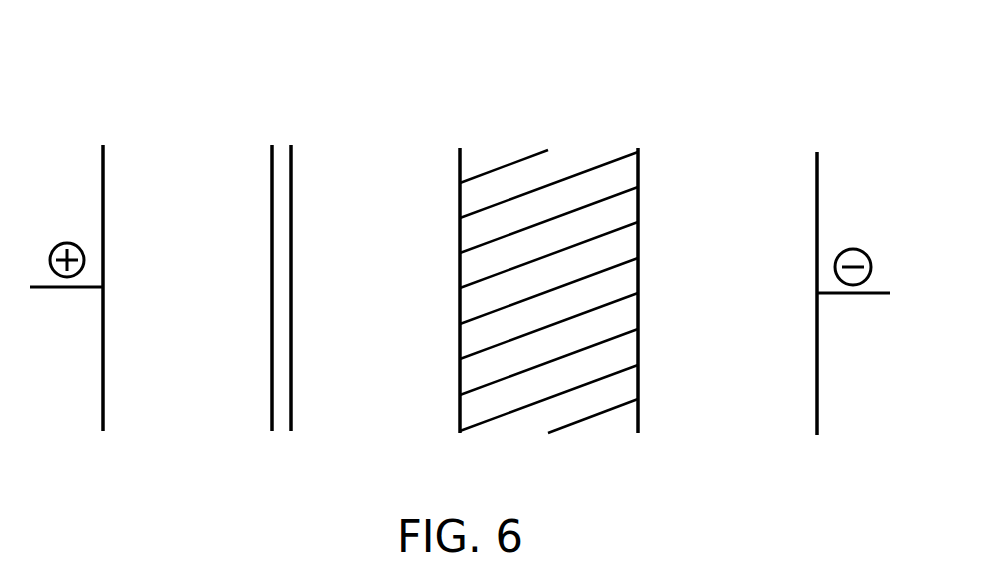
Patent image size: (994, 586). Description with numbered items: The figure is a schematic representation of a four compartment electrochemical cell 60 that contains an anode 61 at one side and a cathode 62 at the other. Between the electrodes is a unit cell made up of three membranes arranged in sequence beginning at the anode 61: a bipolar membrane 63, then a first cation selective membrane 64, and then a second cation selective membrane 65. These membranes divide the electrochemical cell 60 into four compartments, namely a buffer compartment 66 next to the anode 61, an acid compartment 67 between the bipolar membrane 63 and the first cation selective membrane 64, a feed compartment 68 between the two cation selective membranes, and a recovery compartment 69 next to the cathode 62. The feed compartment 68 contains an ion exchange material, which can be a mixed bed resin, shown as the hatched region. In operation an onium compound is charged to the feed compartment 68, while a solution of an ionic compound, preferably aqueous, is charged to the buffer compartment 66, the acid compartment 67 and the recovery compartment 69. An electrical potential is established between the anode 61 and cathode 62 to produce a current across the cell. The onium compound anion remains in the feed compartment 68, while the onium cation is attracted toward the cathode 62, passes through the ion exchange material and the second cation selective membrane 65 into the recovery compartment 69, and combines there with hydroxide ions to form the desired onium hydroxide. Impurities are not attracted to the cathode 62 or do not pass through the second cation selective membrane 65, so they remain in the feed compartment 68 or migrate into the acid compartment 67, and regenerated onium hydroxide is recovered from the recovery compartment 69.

The electrochemical cell 60 is at (134, 64).
The anode 61 is at (74, 272).
The cathode 62 is at (846, 277).
The bipolar membrane 63 is at (281, 295).
The first cation selective membrane 64 is at (460, 295).
The second cation selective membrane 65 is at (638, 295).
The buffer compartment 66 is at (187, 287).
The acid compartment 67 is at (375, 287).
The feed compartment 68 is at (549, 291).
The recovery compartment 69 is at (730, 287).